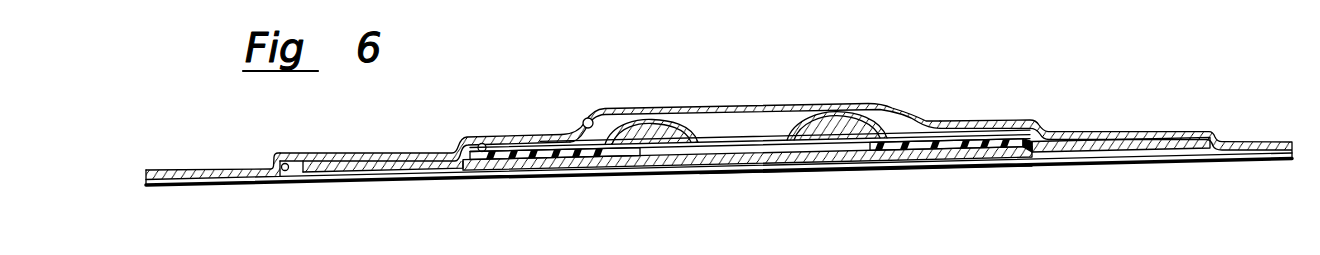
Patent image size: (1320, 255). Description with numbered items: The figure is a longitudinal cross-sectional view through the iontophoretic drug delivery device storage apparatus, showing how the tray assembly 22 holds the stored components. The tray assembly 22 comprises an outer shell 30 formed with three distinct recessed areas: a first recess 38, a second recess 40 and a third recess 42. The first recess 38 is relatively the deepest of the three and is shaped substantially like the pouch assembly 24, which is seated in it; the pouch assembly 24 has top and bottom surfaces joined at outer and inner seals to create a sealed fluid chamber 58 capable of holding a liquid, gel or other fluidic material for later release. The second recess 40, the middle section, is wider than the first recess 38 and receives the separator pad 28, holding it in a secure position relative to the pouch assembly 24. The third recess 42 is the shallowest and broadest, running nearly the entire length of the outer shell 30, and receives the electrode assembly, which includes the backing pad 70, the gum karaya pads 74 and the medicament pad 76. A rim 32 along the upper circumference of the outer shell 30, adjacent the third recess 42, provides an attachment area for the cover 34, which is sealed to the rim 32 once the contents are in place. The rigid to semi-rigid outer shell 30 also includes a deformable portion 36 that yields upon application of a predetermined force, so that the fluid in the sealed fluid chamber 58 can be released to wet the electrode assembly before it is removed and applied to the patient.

The tray assembly 22 is at (192, 169).
The pouch assembly 24 is at (862, 112).
The separator pad 28 is at (512, 151).
The outer shell 30 is at (333, 152).
The rim 32 is at (158, 170).
The cover 34 is at (194, 186).
The deformable portion 36 is at (748, 104).
The first recess 38 is at (588, 118).
The second recess 40 is at (481, 144).
The third recess 42 is at (283, 164).
The sealed fluid chamber 58 is at (690, 120).
The backing pad 70 is at (874, 170).
The gum karaya pads 74 is at (384, 165).
The medicament pad 76 is at (738, 172).